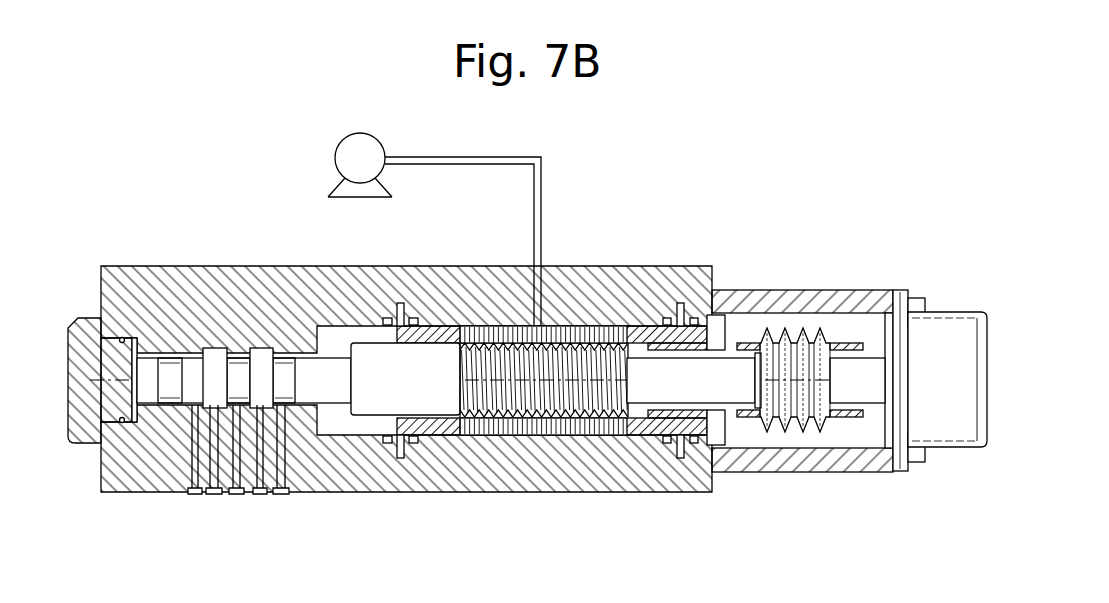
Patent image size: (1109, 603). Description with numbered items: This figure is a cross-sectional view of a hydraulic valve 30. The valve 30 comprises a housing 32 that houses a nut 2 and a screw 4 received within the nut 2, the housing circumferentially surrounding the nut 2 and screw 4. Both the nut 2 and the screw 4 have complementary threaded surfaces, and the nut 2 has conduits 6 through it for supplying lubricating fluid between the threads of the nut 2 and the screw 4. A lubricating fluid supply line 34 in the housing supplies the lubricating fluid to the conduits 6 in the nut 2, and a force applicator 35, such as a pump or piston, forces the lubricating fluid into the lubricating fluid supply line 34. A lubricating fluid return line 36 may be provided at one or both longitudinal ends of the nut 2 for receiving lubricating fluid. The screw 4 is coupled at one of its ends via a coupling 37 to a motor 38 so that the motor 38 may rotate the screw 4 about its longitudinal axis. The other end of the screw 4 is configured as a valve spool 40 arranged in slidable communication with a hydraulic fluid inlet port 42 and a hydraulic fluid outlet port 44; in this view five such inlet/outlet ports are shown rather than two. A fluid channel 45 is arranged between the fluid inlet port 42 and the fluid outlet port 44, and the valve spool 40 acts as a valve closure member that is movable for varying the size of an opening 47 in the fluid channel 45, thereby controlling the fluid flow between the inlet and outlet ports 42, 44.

The nut 2 is at (653, 441).
The screw 4 is at (447, 396).
The conduits 6 is at (522, 330).
The hydraulic valve 30 is at (750, 243).
The housing 32 is at (255, 312).
The lubricating fluid supply line 34 is at (543, 316).
The force applicator 35 is at (348, 150).
The lubricating fluid return line 36 is at (399, 282).
The coupling 37 is at (796, 430).
The motor 38 is at (952, 327).
The valve spool 40 is at (192, 368).
The hydraulic fluid inlet port 42 is at (195, 495).
The hydraulic fluid outlet port 44 is at (213, 495).
The fluid channel 45 is at (192, 462).
The opening 47 is at (188, 405).